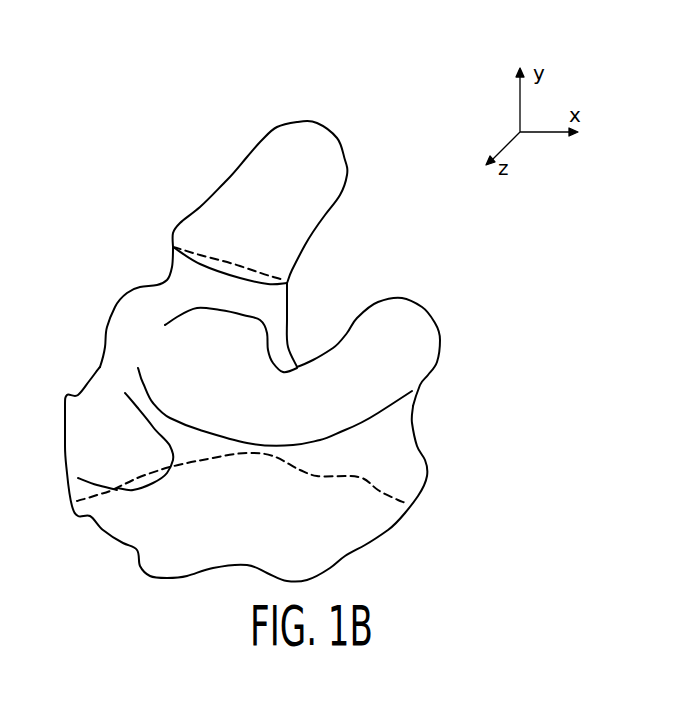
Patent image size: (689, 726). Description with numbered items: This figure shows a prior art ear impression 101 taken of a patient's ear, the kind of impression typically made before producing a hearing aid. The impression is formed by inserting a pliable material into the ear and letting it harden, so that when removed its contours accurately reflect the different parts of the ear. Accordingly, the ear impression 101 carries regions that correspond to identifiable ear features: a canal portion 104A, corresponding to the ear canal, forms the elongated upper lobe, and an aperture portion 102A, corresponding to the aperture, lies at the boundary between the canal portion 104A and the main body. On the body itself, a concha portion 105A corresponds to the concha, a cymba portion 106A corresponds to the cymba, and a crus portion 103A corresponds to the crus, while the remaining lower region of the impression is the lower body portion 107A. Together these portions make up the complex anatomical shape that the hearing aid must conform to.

The ear impression 101 is at (278, 113).
The aperture portion 102A is at (266, 279).
The crus portion 103A is at (248, 430).
The canal portion 104A is at (115, 112).
The concha portion 105A is at (187, 338).
The cymba portion 106A is at (420, 328).
The lower body portion 107A is at (398, 456).